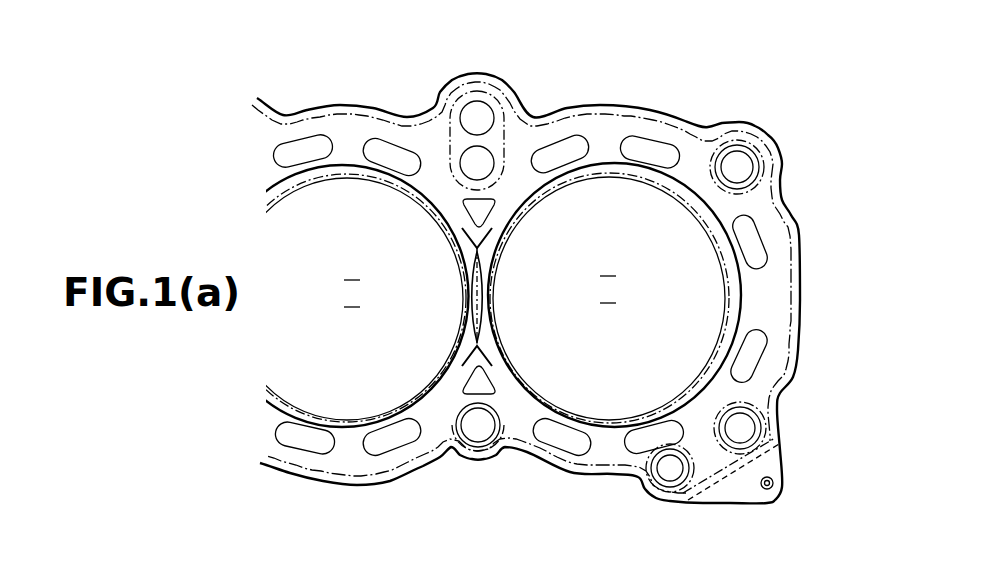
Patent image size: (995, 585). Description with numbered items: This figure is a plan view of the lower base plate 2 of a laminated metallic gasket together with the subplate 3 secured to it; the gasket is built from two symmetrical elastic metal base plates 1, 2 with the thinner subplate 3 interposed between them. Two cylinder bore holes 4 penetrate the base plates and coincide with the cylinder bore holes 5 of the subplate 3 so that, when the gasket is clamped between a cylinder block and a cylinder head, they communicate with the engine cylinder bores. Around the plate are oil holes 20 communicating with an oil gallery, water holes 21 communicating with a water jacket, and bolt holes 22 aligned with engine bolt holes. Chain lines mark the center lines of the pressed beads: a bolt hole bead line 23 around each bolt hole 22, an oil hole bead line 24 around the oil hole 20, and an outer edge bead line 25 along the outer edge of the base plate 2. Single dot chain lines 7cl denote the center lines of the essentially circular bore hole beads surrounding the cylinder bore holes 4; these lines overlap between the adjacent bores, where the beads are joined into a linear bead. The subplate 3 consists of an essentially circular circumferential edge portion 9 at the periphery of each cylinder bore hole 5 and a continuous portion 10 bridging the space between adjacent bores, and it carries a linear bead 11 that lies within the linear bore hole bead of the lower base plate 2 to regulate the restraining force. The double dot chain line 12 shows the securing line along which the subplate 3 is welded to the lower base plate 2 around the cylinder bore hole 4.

The base plate 1 is at (568, 271).
The lower base plate 2 is at (803, 287).
The subplate 3 is at (660, 410).
The cylinder bore hole 4 is at (480, 294).
The cylinder bore hole 5 is at (480, 267).
The bore hole bead center line 7cl is at (378, 416).
The circumferential edge portion 9 is at (362, 170).
The continuous portion 10 is at (488, 248).
The linear bead 11 is at (486, 296).
The securing line 12 is at (430, 215).
The oil hole 20 is at (475, 108).
The water hole 21 is at (309, 146).
The bolt hole 22 is at (470, 160).
The bolt hole bead line 23 is at (507, 130).
The oil hole bead line 24 is at (708, 526).
The outer edge bead line 25 is at (622, 113).